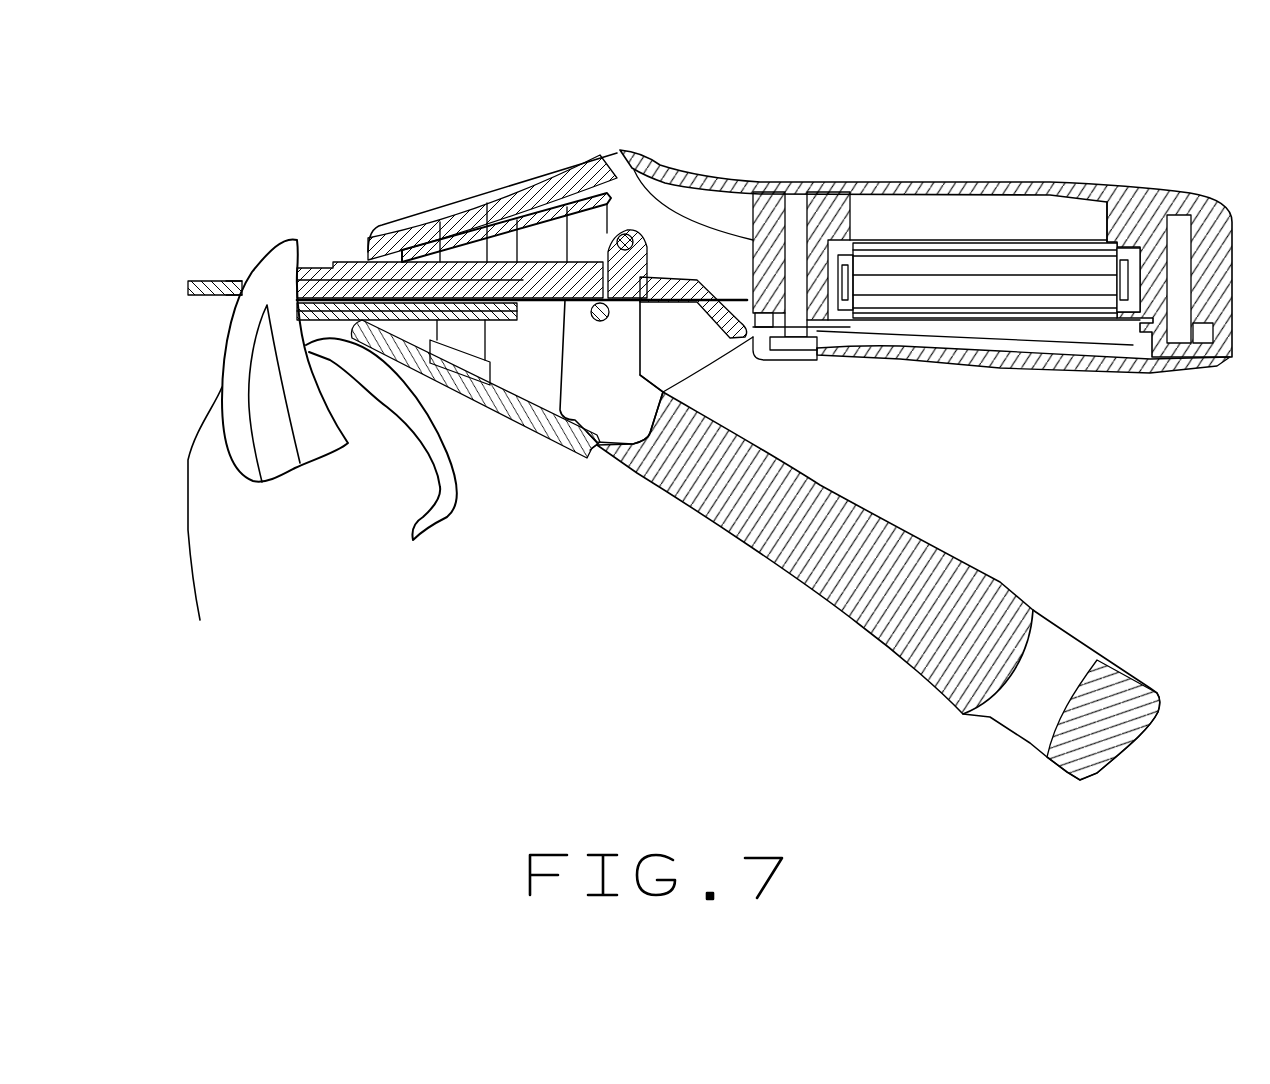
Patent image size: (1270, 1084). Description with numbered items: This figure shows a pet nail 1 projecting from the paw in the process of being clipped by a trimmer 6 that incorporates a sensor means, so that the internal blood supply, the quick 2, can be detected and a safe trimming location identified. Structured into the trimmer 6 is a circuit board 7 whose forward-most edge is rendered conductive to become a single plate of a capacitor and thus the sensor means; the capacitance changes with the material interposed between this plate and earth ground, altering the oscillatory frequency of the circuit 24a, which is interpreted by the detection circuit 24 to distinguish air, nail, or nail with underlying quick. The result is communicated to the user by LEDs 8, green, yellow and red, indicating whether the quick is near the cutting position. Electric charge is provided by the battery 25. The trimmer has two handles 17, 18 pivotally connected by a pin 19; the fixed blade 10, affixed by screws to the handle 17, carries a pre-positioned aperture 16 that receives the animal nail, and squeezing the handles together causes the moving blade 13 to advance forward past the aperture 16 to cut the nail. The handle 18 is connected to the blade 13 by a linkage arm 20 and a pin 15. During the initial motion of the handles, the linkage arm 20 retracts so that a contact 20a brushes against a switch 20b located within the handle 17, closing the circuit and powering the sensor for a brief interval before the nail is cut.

The nail 1 is at (282, 257).
The quick 2 is at (222, 383).
The trimmer 6 is at (931, 172).
The circuit board 7 is at (327, 298).
The LEDs 8 is at (556, 195).
The fixed blade 10 is at (206, 281).
The blade 13 is at (355, 258).
The pin 15 is at (623, 232).
The aperture 16 is at (232, 280).
The handle 17 is at (1143, 192).
The handle 18 is at (995, 583).
The pin 19 is at (601, 323).
The linkage arm 20 is at (667, 288).
The contact 20a is at (756, 310).
The switch 20b is at (813, 300).
The circuit 24 is at (972, 352).
The oscillatory frequency circuit 24a is at (740, 352).
The battery 25 is at (997, 240).